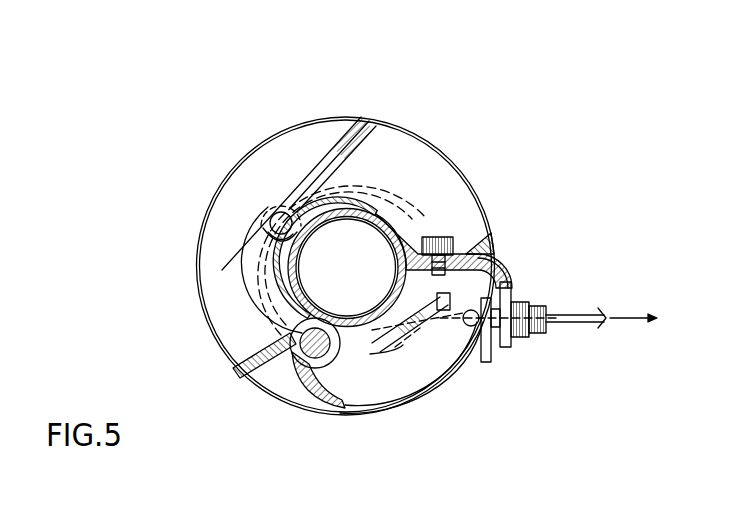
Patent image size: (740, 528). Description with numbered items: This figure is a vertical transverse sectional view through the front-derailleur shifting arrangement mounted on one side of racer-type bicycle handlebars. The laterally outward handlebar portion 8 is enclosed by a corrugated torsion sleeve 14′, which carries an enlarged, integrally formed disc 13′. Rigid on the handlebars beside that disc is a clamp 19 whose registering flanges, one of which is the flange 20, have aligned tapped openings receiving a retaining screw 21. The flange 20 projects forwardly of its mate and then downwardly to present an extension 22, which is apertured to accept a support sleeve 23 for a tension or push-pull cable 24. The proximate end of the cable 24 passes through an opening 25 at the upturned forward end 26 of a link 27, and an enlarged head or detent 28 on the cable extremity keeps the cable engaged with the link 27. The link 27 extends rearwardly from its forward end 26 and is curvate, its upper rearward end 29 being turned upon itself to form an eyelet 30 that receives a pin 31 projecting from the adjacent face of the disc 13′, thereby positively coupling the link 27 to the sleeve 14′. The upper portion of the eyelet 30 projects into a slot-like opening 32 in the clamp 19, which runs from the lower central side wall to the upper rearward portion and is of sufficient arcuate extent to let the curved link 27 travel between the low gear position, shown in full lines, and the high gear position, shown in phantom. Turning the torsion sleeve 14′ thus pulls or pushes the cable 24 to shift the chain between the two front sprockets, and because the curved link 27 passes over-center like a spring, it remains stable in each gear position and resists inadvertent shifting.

The portion of handlebars 8 is at (371, 203).
The torsion sleeve 14′ is at (393, 207).
The disc 13′ is at (408, 210).
The clamp 19 is at (417, 225).
The flange 20 is at (478, 240).
The retaining screw 21 is at (455, 238).
The extension 22 is at (511, 280).
The support sleeve 23 is at (533, 298).
The push-pull cable 24 is at (562, 312).
The opening 25 is at (492, 368).
The upturned forward end 26 is at (489, 362).
The link 27 is at (408, 410).
The enlarged head or detent 28 is at (482, 362).
The upper rearward end 29 is at (293, 355).
The eyelet 30 is at (305, 343).
The pin 31 is at (293, 332).
The slot-like opening 32 is at (287, 265).